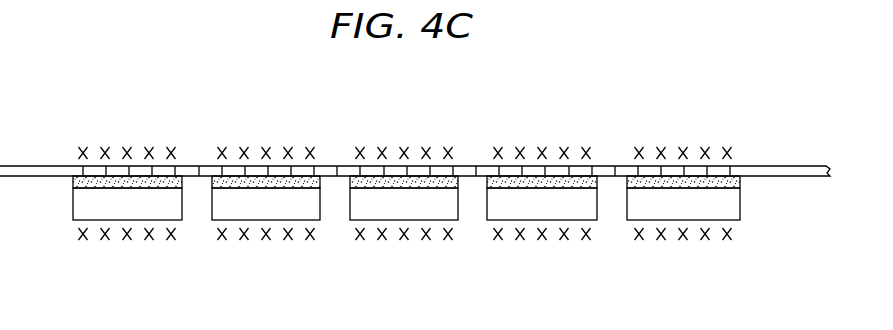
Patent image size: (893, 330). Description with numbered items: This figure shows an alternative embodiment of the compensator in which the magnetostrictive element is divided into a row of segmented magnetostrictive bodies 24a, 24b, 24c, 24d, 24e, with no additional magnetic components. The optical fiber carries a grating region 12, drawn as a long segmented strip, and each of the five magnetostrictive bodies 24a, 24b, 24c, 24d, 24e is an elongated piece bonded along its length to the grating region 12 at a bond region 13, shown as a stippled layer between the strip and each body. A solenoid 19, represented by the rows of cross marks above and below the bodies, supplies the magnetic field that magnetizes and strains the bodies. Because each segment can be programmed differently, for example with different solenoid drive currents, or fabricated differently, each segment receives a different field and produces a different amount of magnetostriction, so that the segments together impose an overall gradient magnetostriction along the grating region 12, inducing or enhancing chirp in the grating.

The grating region 12 is at (403, 172).
The bond region 13 is at (742, 184).
The solenoid 19 is at (131, 243).
The segmented magnetostrictive body 24a is at (174, 208).
The segmented magnetostrictive body 24b is at (312, 208).
The segmented magnetostrictive body 24c is at (449, 208).
The segmented magnetostrictive body 24d is at (588, 208).
The segmented magnetostrictive body 24e is at (729, 208).